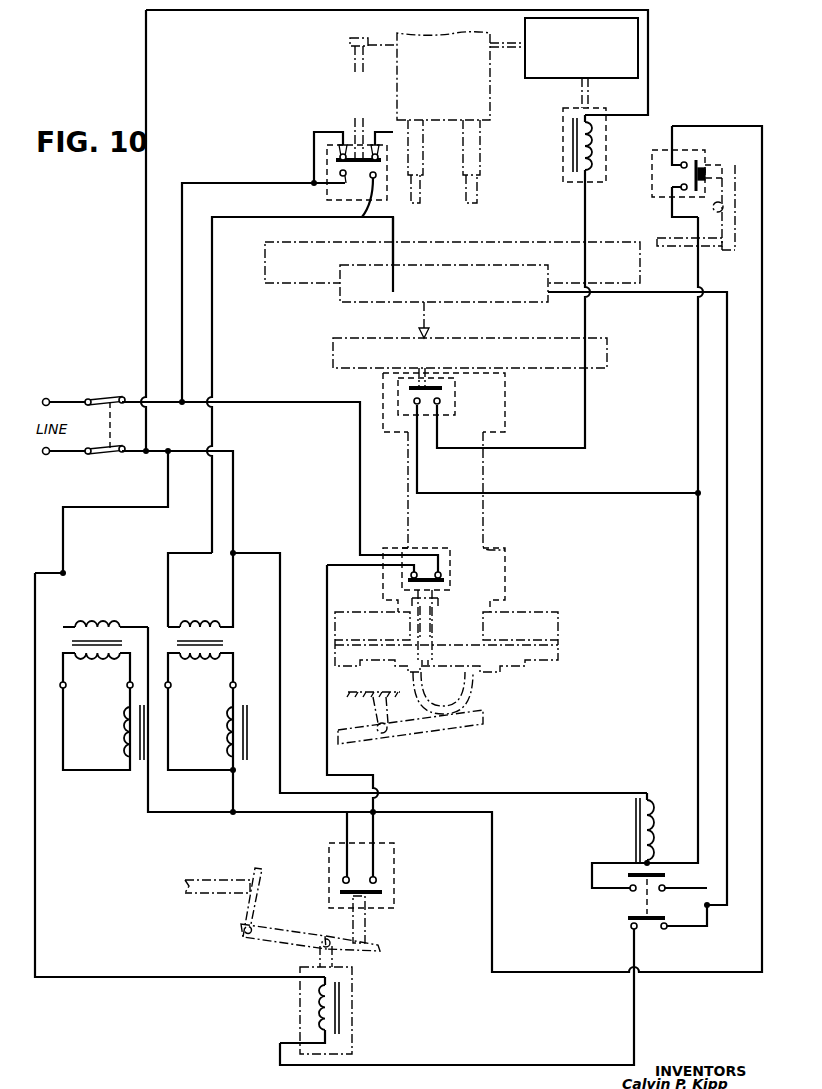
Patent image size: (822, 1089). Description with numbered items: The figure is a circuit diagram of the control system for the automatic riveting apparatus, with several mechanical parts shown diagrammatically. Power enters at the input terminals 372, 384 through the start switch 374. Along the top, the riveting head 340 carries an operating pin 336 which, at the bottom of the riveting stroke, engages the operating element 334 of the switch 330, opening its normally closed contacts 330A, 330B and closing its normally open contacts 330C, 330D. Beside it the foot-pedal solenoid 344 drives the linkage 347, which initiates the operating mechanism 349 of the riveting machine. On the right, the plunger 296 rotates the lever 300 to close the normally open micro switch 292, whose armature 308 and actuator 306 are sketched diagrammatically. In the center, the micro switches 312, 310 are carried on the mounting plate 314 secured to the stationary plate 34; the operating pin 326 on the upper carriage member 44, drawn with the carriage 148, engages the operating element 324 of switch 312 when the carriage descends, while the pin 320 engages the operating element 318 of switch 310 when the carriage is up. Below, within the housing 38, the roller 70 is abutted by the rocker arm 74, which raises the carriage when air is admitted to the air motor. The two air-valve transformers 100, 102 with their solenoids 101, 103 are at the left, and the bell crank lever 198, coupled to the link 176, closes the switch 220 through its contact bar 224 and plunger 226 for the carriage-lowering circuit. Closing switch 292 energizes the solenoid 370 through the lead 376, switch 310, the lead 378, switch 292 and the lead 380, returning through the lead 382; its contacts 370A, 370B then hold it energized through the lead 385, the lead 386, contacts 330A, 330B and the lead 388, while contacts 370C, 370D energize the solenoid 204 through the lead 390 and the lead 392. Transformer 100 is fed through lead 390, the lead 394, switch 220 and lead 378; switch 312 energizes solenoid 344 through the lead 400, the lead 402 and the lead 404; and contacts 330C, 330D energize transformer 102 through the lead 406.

The lead 400 is at (146, 97).
The lead 388 is at (233, 183).
The lead 406 is at (212, 290).
The power input terminal 372 is at (47, 398).
The power input terminal 384 is at (47, 455).
The start switch 374 is at (110, 398).
The lead 376 is at (290, 402).
The lead 390 is at (112, 507).
The lead 382 is at (234, 490).
The transformer 100 is at (97, 614).
The solenoid 101 is at (124, 730).
The transformer 102 is at (196, 616).
The solenoid 103 is at (228, 730).
The lead 394 is at (198, 812).
The lead 378 is at (327, 704).
The lead 392 is at (432, 1065).
The switch 220 is at (394, 866).
The relay contact bar 224 is at (383, 898).
The relay plunger 226 is at (366, 920).
The bell crank lever 198 is at (282, 932).
The link 176 is at (214, 880).
The solenoid 204 is at (352, 998).
The switch 330 is at (324, 186).
The contact 330A is at (342, 130).
The contact 330B is at (377, 130).
The contact 330C is at (340, 172).
The contact 330D is at (353, 194).
The operating element 334 is at (358, 118).
The operating pin 336 is at (356, 70).
The riveting head 340 is at (461, 117).
The operating mechanism for the automatic riveting machine 349 is at (525, 26).
The linkage 347 is at (578, 92).
The solenoid 344 is at (563, 140).
The lead 402 is at (585, 224).
The micro switch 292 is at (662, 148).
The relay armature 308 is at (697, 160).
The actuator 306 is at (713, 165).
The lever 300 is at (735, 248).
The plunger 296 is at (676, 246).
The lead 386 is at (727, 596).
The lead 380 is at (698, 384).
The lead 404 is at (576, 494).
The carriage 148 is at (490, 240).
The upper carriage member 44 is at (484, 306).
The operating pin 326 is at (418, 310).
The stationary plate 34 is at (610, 355).
The micro switch 312 is at (456, 402).
The operating element 324 is at (430, 372).
The mounting plate 314 is at (486, 474).
The micro switch 310 is at (428, 548).
The operating element 318 is at (440, 585).
The pin 320 is at (432, 622).
The housing 38 is at (560, 616).
The roller 70 is at (473, 695).
The rocker arm 74 is at (432, 734).
The solenoid 370 is at (656, 824).
The lead 385 is at (604, 863).
The contact 370A is at (633, 891).
The contact 370B is at (665, 886).
The contact 370C is at (631, 928).
The contact 370D is at (665, 929).